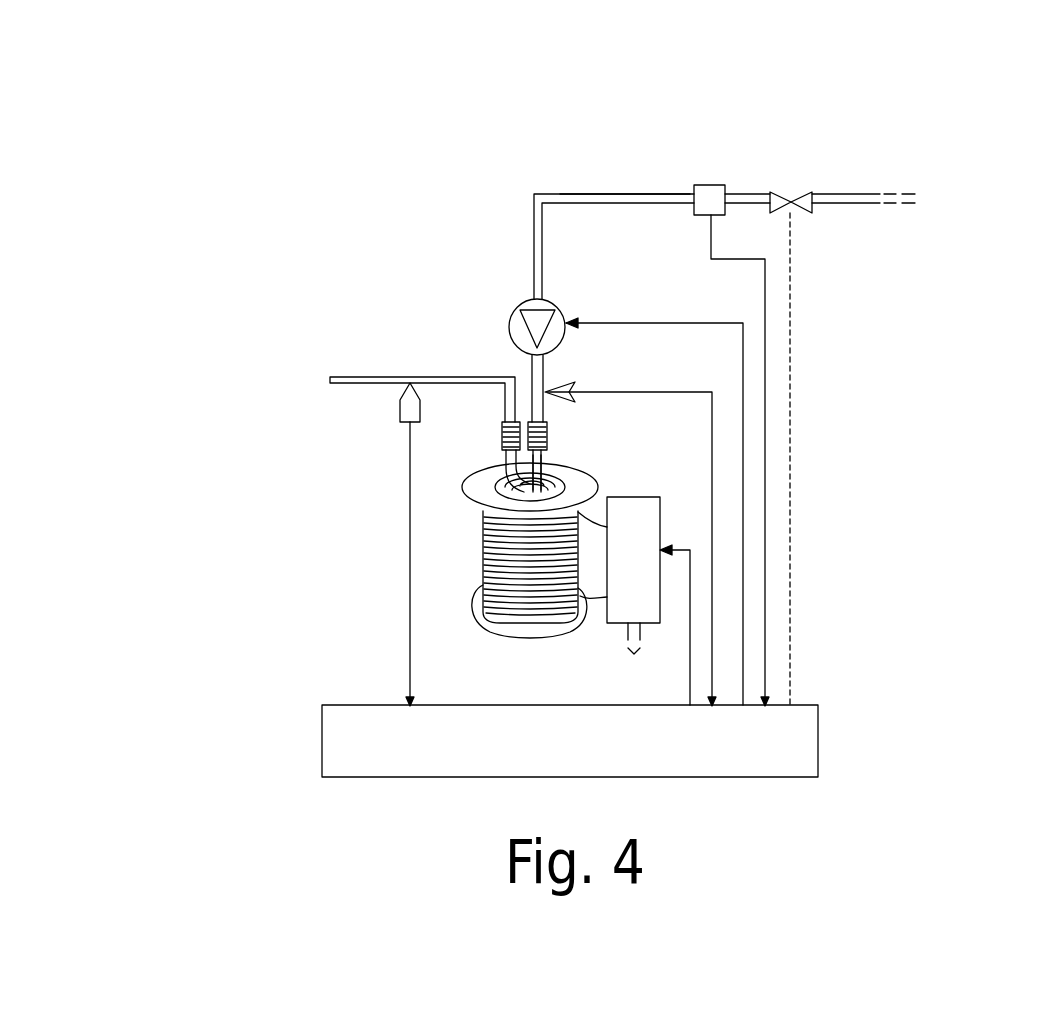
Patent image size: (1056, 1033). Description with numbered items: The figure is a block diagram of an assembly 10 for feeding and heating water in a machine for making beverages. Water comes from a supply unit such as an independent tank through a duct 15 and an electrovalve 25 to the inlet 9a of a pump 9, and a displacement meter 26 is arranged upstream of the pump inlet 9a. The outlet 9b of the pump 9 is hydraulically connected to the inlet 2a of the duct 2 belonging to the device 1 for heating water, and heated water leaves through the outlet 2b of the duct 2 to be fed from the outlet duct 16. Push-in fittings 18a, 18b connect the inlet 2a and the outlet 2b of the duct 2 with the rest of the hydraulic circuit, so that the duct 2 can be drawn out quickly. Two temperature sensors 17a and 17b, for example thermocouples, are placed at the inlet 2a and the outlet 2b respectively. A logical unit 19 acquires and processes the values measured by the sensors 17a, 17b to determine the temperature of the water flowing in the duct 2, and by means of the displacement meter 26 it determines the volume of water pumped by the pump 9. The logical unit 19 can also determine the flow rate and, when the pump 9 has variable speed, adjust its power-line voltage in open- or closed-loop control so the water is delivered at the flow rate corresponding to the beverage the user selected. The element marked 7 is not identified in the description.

The device for heating water 1 is at (458, 573).
The duct 2 is at (478, 512).
The inlet of the duct 2a is at (549, 436).
The outlet of the duct 2b is at (470, 484).
The control unit 7 is at (658, 520).
The pump 9 is at (508, 327).
The inlet of the pump 9a is at (530, 200).
The outlet of the pump 9b is at (520, 353).
The assembly for feeding and heating water 10 is at (425, 176).
The duct 15 is at (606, 195).
The outlet duct 16 is at (330, 380).
The temperature sensor 17a is at (578, 385).
The temperature sensor 17b is at (400, 410).
The push-in fitting 18a is at (545, 460).
The push-in fitting 18b is at (502, 438).
The logical unit 19 is at (790, 742).
The electrovalve 25 is at (786, 192).
The displacement meter 26 is at (711, 185).